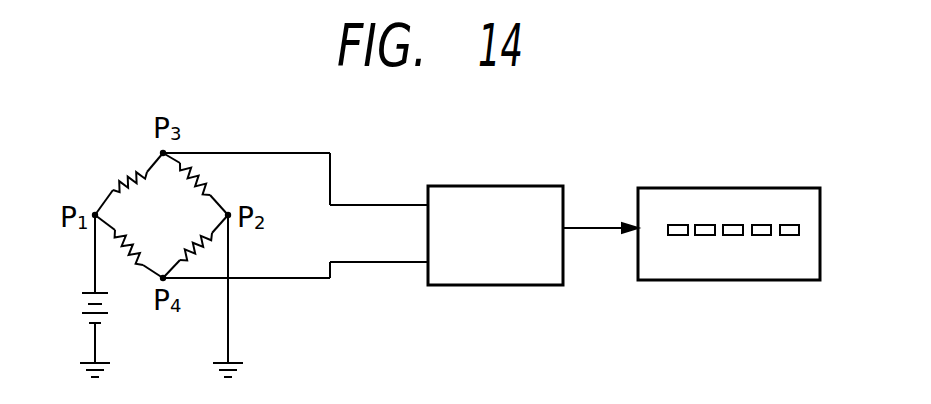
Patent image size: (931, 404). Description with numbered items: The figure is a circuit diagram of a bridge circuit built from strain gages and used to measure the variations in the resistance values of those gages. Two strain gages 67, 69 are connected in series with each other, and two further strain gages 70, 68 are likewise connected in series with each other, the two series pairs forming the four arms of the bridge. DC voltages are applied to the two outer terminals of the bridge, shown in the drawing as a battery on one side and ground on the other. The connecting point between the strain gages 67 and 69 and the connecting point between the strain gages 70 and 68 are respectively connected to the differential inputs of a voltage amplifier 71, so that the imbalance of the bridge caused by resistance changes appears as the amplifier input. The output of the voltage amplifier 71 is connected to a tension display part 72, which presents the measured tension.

The strain gage 67 is at (126, 185).
The strain gage 68 is at (200, 245).
The strain gage 69 is at (200, 182).
The strain gage 70 is at (138, 250).
The voltage amplifier 71 is at (523, 186).
The tension display part 72 is at (780, 188).